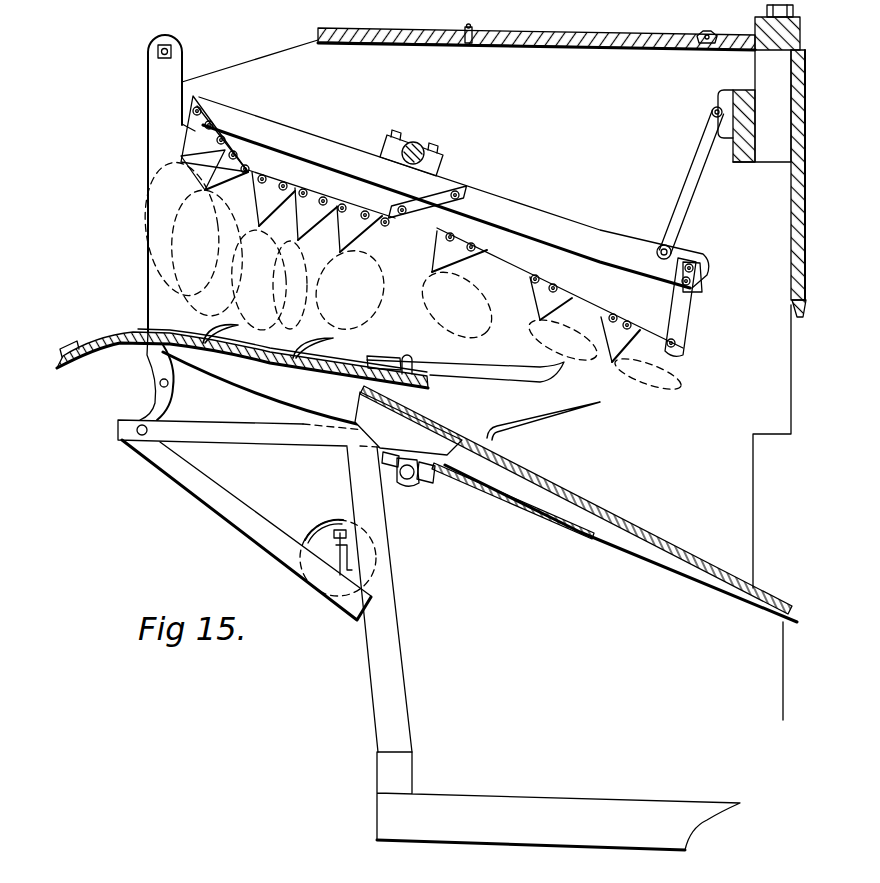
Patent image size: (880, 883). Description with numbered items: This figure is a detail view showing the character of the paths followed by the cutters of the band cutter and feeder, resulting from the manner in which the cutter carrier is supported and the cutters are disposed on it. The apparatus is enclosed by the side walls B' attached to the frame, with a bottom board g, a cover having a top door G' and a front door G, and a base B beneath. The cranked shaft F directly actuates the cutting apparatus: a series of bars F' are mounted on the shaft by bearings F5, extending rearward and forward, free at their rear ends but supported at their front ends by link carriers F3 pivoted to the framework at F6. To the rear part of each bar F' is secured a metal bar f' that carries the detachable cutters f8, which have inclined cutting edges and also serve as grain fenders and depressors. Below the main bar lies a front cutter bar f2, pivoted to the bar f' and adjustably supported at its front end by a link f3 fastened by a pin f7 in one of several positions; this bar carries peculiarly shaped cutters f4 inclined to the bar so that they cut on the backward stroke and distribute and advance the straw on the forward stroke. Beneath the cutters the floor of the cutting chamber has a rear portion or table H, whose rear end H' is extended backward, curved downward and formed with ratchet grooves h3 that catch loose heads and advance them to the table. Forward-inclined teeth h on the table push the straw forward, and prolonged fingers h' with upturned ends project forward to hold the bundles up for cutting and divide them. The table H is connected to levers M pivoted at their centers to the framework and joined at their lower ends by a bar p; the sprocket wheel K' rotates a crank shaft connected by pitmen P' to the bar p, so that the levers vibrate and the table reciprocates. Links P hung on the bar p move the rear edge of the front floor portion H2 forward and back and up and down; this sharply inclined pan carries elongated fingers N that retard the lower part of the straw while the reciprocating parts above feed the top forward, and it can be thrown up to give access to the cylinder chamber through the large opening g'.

The side wall B' is at (469, 377).
The top door G' is at (536, 26).
The front door G is at (779, 161).
The pivot of link carrier F6 is at (712, 113).
The link carrier F3 is at (673, 199).
The bar F' is at (454, 192).
The detachable cutter f8 is at (192, 147).
The metal bar f' is at (440, 211).
The front cutter bar f2 is at (255, 203).
The cutter f4 is at (551, 279).
The bearing F5 is at (432, 166).
The shaft F is at (436, 160).
The pin f7 is at (698, 281).
The link f3 is at (677, 314).
The rear end of table H' is at (225, 361).
The rear floor portion / table H is at (282, 346).
The ratchet groove h3 is at (87, 347).
The tooth h is at (251, 354).
The prolonged finger h' is at (465, 362).
The lever M is at (148, 400).
The link P is at (275, 453).
The shaft or bar p is at (137, 438).
The pitman P' is at (246, 530).
The sprocket wheel K' is at (334, 546).
The elongated finger N is at (522, 425).
The front floor portion H2 is at (591, 506).
The bottom board g is at (513, 501).
The opening g' is at (480, 487).
The base beam B is at (543, 648).